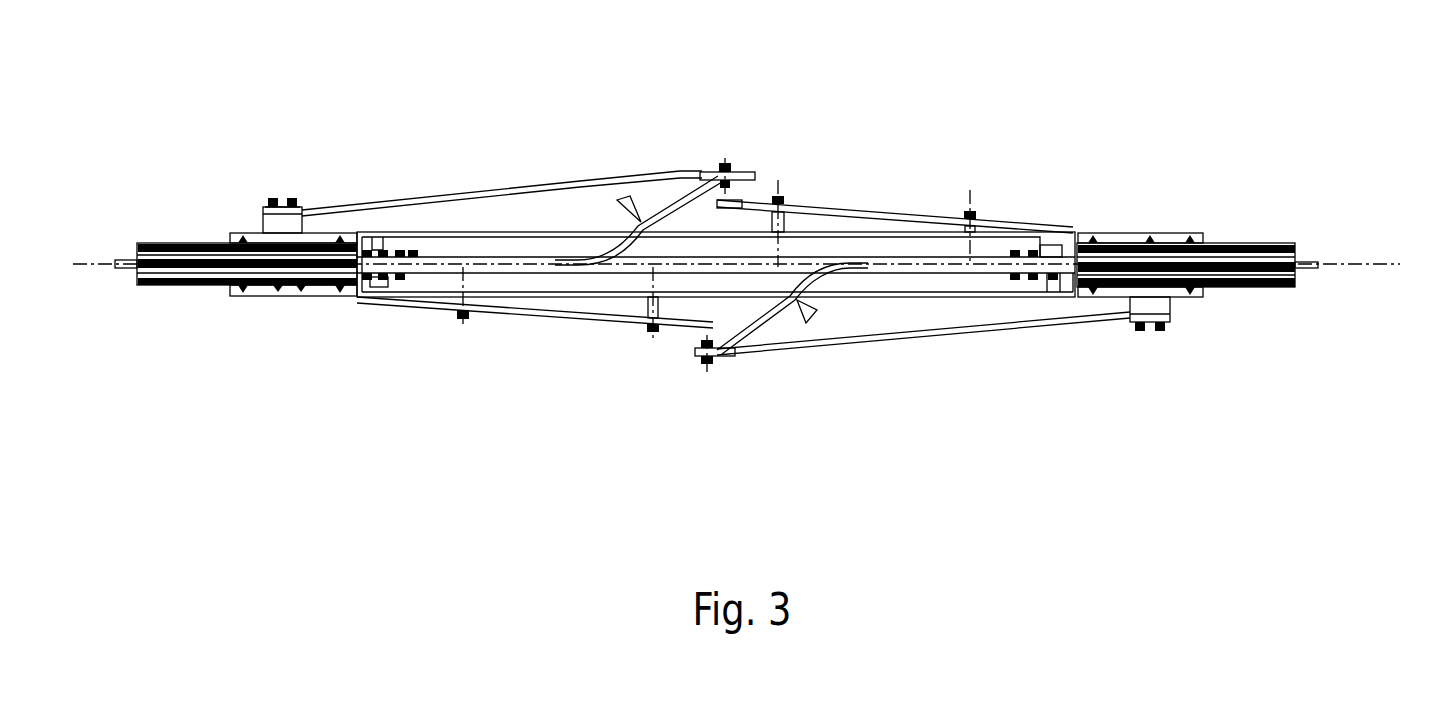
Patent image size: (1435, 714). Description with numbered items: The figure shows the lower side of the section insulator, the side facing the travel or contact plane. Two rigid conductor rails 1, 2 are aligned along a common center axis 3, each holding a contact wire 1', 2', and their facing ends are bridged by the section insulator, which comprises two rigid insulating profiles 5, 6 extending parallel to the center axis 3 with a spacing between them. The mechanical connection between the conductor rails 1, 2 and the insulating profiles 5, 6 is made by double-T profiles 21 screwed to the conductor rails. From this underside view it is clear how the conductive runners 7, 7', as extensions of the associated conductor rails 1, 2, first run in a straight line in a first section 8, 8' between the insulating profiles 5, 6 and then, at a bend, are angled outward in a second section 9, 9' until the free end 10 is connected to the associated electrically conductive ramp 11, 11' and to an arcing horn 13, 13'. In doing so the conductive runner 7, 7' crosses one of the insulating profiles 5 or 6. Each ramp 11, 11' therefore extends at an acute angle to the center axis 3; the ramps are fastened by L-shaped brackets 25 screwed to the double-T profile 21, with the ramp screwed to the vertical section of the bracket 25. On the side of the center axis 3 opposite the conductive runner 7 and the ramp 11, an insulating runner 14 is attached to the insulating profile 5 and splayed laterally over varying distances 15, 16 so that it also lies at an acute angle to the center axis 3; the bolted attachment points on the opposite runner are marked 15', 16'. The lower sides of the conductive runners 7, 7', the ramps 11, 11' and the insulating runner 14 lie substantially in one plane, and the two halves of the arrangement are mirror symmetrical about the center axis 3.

The conductor rail 1 is at (247, 371).
The contact wire 1' is at (122, 380).
The conductor rail 2 is at (1186, 371).
The contact wire 2' is at (1311, 381).
The center axis 3 is at (1385, 268).
The insulating profile 5 is at (1008, 286).
The insulating profile 6 is at (913, 243).
The conductive runner 7 is at (627, 128).
The conductive runner 7' is at (821, 400).
The first section 8 is at (502, 125).
The first section 8' is at (716, 386).
The second section 9 is at (638, 149).
The second section 9' is at (792, 381).
The free end 10 is at (752, 172).
The electrically conductive ramp 11 is at (502, 122).
The electrically conductive ramp 11' is at (923, 406).
The arcing horn 13 is at (777, 150).
The arcing horn 13' is at (912, 409).
The insulating runner 14 is at (560, 320).
The distance 15 is at (464, 383).
The lever arm 15' is at (895, 133).
The distance 16 is at (666, 383).
The bolt 16' is at (976, 148).
The double-T profile 21 is at (258, 297).
The L-shaped bracket 25 is at (272, 200).